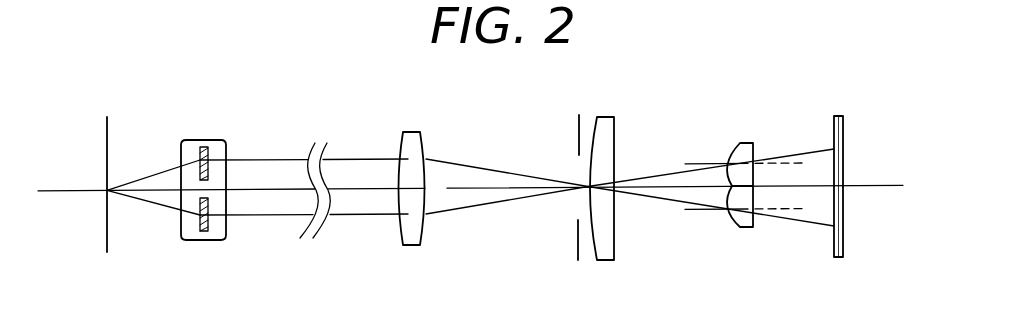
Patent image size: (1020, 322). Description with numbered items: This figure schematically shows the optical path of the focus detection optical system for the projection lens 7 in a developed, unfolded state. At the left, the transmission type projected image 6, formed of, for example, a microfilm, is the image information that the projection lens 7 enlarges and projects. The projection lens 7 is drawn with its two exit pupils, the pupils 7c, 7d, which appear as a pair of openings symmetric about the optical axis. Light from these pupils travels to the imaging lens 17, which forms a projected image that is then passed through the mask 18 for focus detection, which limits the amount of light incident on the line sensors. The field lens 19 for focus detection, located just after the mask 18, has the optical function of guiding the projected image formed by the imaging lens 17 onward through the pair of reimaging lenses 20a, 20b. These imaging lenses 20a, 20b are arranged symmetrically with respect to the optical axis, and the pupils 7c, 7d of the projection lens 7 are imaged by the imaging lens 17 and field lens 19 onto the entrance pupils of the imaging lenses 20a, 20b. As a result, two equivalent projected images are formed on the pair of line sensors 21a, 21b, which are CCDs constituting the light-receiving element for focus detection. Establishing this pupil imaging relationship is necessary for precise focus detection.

The transmission type projected image 6 is at (107, 132).
The projection lens 7 is at (193, 140).
The pupil of the projection lens 7c is at (205, 160).
The pupil of the projection lens 7d is at (200, 226).
The imaging lens 17 is at (415, 132).
The mask 18 is at (579, 120).
The field lens 19 is at (605, 122).
The imaging lens (reimaging lens) 20a is at (742, 143).
The imaging lens (reimaging lens) 20b is at (742, 227).
The line sensor 21a is at (839, 116).
The line sensor 21b is at (854, 273).